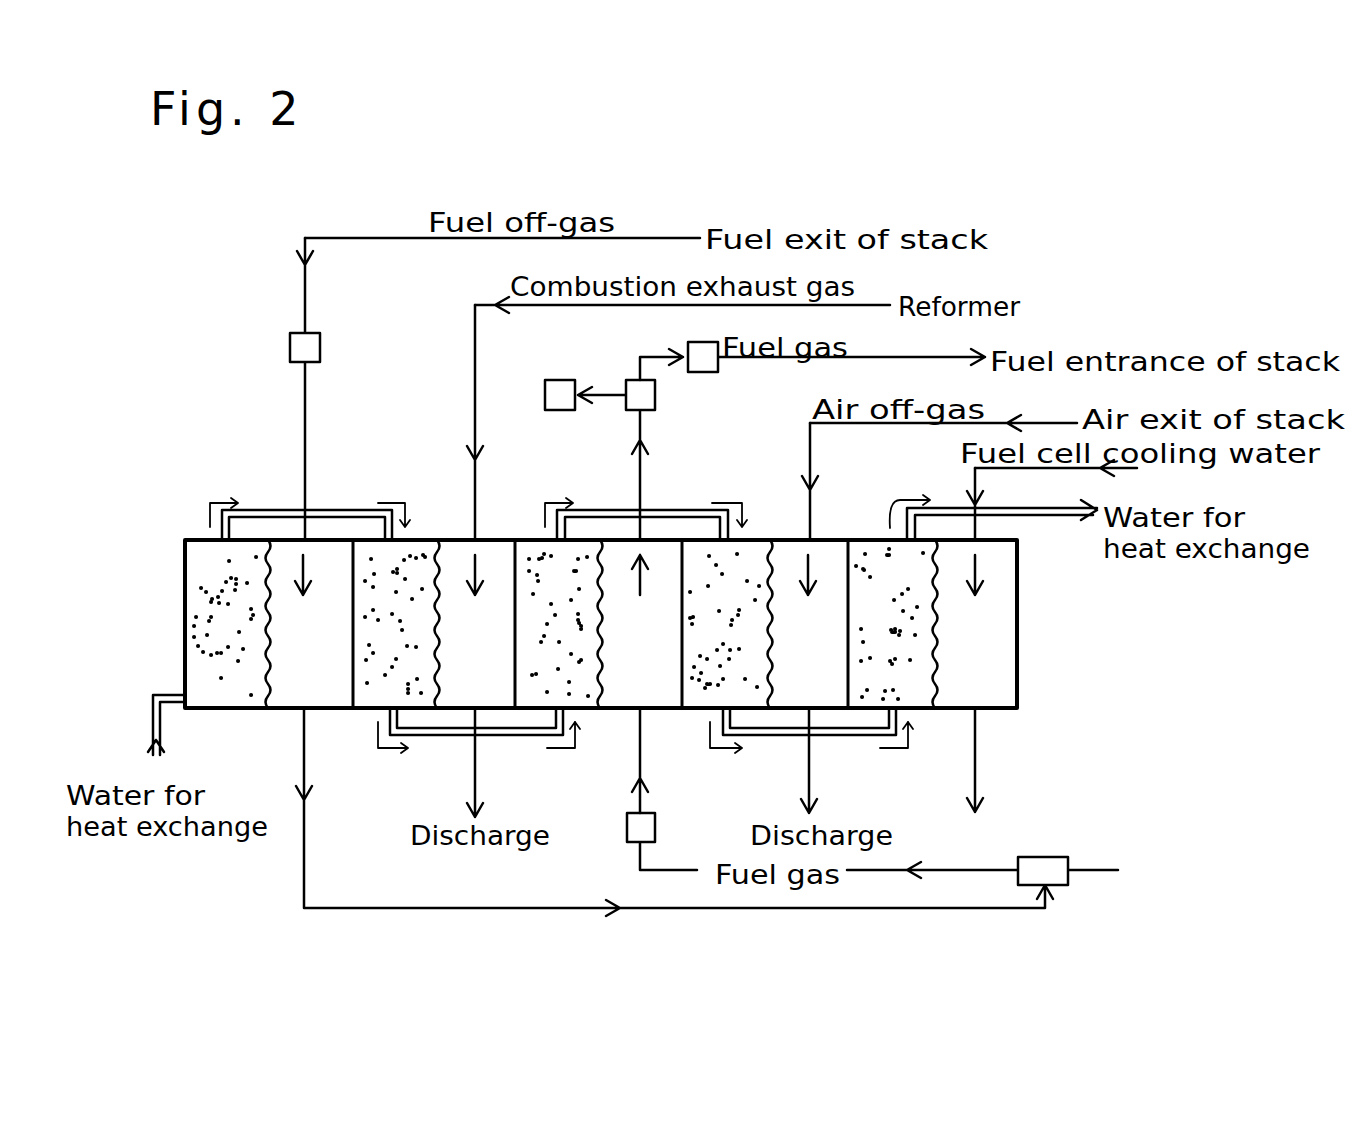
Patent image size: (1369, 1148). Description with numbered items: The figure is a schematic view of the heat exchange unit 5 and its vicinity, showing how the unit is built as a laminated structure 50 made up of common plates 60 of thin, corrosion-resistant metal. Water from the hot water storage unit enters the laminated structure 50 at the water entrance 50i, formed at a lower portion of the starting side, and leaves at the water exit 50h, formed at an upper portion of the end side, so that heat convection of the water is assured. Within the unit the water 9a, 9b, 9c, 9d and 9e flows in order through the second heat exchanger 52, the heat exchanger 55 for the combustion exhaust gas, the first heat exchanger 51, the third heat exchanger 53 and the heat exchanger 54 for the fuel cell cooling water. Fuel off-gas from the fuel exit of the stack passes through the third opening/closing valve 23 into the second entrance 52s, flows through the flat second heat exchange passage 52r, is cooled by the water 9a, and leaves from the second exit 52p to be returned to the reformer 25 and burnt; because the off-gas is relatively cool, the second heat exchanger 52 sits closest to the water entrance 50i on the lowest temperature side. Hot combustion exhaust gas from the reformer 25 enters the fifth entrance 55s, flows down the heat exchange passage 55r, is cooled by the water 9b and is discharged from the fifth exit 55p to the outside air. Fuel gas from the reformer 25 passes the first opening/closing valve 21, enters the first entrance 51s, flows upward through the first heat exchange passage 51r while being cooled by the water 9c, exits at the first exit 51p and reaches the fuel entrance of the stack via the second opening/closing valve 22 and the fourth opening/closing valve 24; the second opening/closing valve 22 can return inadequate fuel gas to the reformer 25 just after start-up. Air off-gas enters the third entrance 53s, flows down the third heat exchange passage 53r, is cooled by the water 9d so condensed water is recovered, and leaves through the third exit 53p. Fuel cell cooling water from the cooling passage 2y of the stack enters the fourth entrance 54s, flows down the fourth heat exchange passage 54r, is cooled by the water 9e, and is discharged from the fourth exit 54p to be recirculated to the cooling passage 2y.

The cooling passage 2y is at (977, 840).
The heat exchange unit 5 is at (163, 577).
The water 9a is at (223, 688).
The water 9b is at (390, 688).
The water 9c is at (558, 688).
The water 9d is at (725, 688).
The water 9e is at (891, 688).
The first opening/closing valve 21 is at (656, 826).
The second opening/closing valve 22 is at (656, 395).
The third opening/closing valve 23 is at (321, 345).
The fourth opening/closing valve 24 is at (724, 370).
The reformer 25 is at (562, 380).
The laminated structure 50 is at (185, 548).
The water exit 50h is at (888, 524).
The water entrance 50i is at (180, 690).
The first heat exchanger 51 is at (654, 560).
The first exit 51p is at (635, 540).
The first heat exchange passage 51r is at (638, 681).
The first entrance 51s is at (632, 708).
The second heat exchanger 52 is at (322, 560).
The second exit 52p is at (304, 708).
The second heat exchange passage 52r is at (303, 681).
The second entrance 52s is at (300, 542).
The third heat exchanger 53 is at (825, 560).
The third exit 53p is at (805, 708).
The third heat exchange passage 53r is at (806, 681).
The third entrance 53s is at (803, 540).
The heat exchanger for fuel cell cooling water 54 is at (1017, 565).
The fourth exit 54p is at (978, 710).
The fourth heat exchange passage 54r is at (973, 681).
The fourth entrance 54s is at (985, 540).
The heat exchanger for combustion exhaust gas 55 is at (490, 560).
The fifth exit 55p is at (472, 708).
The heat exchange passage 55r is at (473, 681).
The fifth entrance 55s is at (470, 540).
The common plate 60 is at (266, 604).